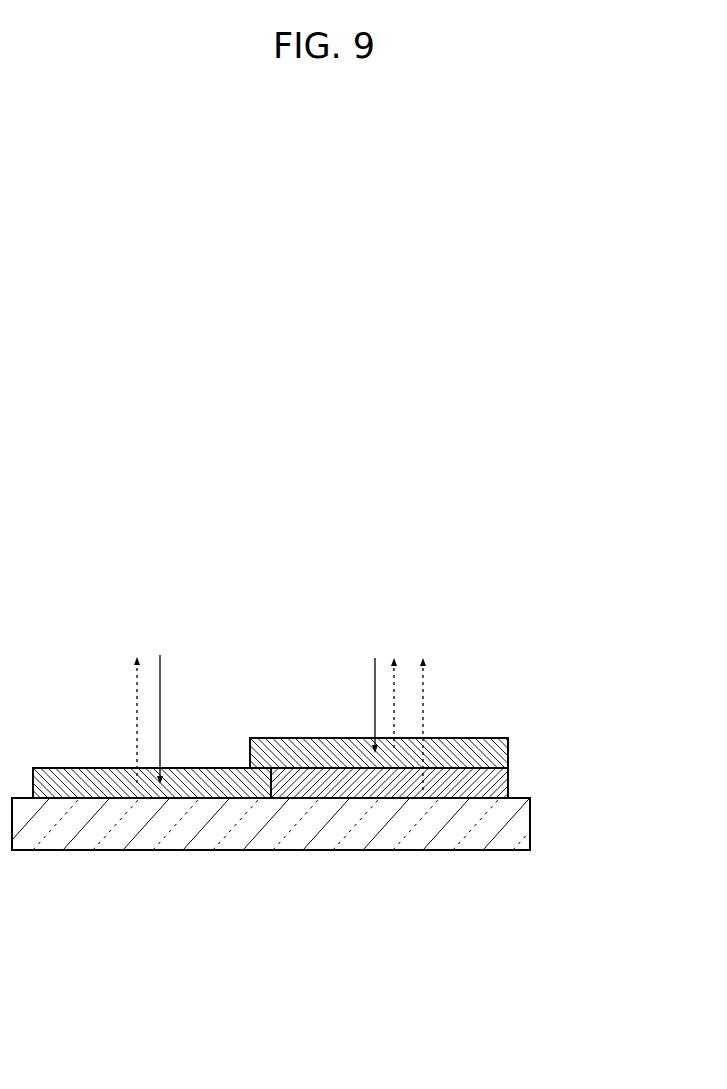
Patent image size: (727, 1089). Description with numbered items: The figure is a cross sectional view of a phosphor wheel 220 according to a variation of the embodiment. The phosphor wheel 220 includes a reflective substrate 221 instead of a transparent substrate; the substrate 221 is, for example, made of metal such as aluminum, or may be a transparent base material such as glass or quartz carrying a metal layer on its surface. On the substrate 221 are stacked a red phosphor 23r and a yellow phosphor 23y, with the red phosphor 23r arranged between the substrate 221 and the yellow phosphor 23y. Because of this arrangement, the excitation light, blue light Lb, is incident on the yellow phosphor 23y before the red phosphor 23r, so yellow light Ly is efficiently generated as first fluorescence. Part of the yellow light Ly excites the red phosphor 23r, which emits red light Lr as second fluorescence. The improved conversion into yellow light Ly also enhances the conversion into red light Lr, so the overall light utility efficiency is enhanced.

The phosphor wheel 220 is at (308, 722).
The reflective substrate 221 is at (515, 833).
The yellow phosphor 23y is at (100, 775).
The red phosphor 23r is at (305, 778).
The blue light Lb is at (162, 698).
The yellow light Ly is at (137, 698).
The red light Lr is at (423, 727).